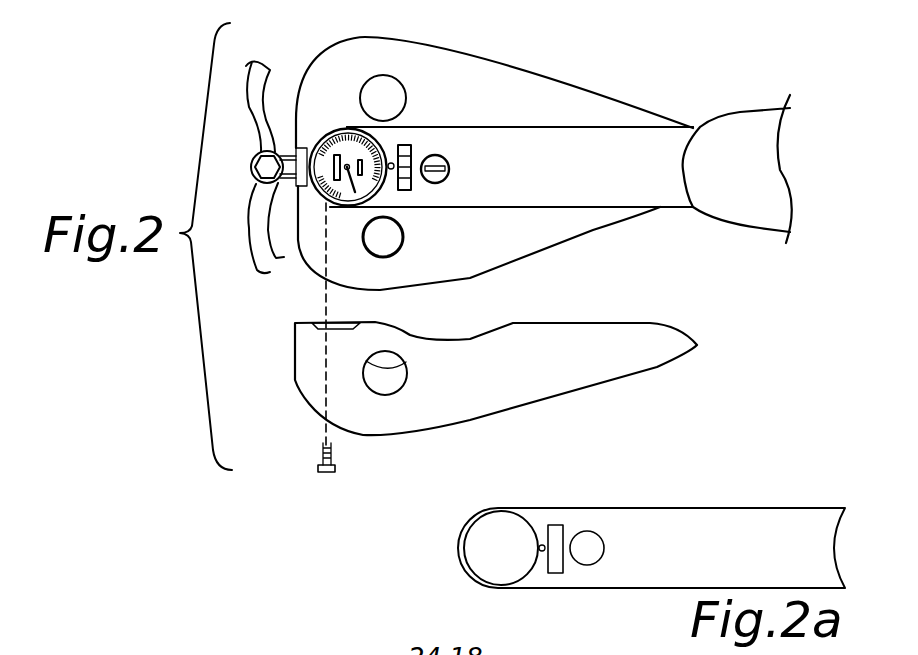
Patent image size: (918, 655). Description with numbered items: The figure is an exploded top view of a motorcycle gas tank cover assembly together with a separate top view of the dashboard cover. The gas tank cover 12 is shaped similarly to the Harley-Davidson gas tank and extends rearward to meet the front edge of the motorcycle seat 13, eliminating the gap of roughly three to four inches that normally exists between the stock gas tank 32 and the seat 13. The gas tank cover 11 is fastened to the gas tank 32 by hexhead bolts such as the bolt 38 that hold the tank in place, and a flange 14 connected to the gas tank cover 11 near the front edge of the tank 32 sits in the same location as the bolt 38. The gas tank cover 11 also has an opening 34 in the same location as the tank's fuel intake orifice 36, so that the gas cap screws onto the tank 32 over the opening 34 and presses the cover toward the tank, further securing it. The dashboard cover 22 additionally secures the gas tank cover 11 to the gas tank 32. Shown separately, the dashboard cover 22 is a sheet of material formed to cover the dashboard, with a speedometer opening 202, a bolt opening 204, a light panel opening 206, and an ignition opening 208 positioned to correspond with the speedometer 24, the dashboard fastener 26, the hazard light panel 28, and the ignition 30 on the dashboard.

In FIG. 2, the gas tank cover 11 is at (640, 333).
In FIG. 2, the gas tank cover 12 is at (540, 93).
In FIG. 2, the motorcycle seat 13 is at (730, 148).
In FIG. 2, the flange 14 is at (315, 323).
In FIG. 2, the dashboard cover 22 is at (643, 145).
In FIG. 2, the speedometer 24 is at (346, 150).
In FIG. 2, the dashboard fastener 26 is at (383, 147).
In FIG. 2, the hazard light panel 28 is at (411, 147).
In FIG. 2, the ignition 30 is at (438, 155).
In FIG. 2, the gas tank 32 is at (593, 230).
In FIG. 2, the opening 34 is at (405, 387).
In FIG. 2, the intake orifice 36 is at (390, 240).
In FIG. 2, the hexhead bolt 38 is at (325, 447).
In FIG. 2A, the speedometer opening 202 is at (480, 553).
In FIG. 2A, the bolt opening 204 is at (543, 545).
In FIG. 2A, the light panel opening 206 is at (553, 570).
In FIG. 2A, the ignition opening 208 is at (588, 555).